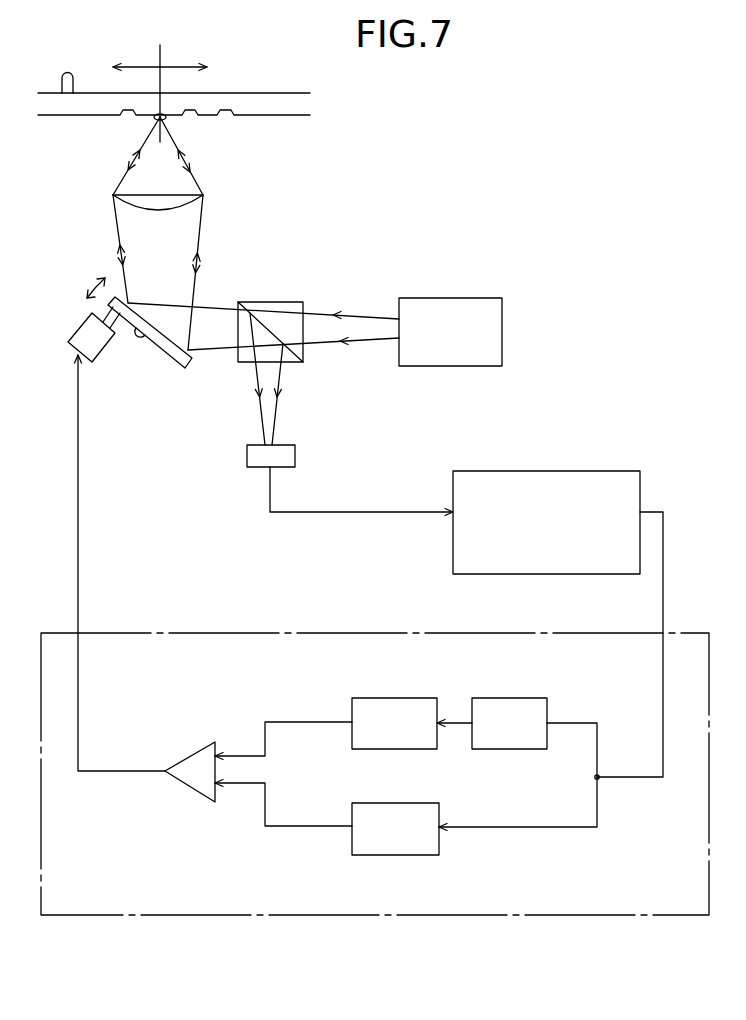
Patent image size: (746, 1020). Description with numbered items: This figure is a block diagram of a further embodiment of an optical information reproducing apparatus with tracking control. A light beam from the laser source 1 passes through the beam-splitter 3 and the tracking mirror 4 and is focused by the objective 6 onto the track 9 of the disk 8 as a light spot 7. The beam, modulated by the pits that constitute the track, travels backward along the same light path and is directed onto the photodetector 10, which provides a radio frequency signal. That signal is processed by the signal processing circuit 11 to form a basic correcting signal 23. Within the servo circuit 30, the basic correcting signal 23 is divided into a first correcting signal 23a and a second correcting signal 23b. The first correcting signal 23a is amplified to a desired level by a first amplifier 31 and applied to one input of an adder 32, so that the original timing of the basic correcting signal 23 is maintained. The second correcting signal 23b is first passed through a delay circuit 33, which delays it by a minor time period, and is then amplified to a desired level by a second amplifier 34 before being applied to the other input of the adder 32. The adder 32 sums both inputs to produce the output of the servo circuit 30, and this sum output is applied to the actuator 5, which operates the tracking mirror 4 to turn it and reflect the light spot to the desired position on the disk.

The laser source 1 is at (445, 298).
The beam-splitter 3 is at (280, 302).
The tracking mirror 4 is at (163, 352).
The actuator 5 is at (70, 337).
The objective 6 is at (183, 208).
The light spot 7 is at (163, 120).
The disk 8 is at (283, 92).
The track 9 is at (152, 108).
The photodetector 10 is at (296, 455).
The signal processing circuit 11 is at (515, 470).
The basic correcting signal 23 is at (663, 575).
The first correcting signal 23a is at (552, 828).
The second correcting signal 23b is at (571, 723).
The servo circuit 30 is at (73, 916).
The first amplifier 31 is at (408, 855).
The adder 32 is at (177, 780).
The delay circuit 33 is at (505, 698).
The second amplifier 34 is at (388, 698).